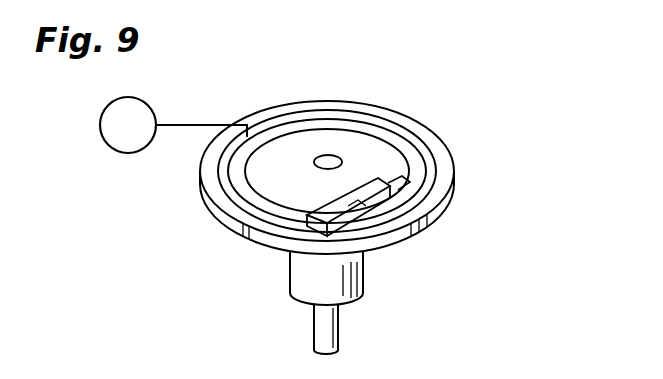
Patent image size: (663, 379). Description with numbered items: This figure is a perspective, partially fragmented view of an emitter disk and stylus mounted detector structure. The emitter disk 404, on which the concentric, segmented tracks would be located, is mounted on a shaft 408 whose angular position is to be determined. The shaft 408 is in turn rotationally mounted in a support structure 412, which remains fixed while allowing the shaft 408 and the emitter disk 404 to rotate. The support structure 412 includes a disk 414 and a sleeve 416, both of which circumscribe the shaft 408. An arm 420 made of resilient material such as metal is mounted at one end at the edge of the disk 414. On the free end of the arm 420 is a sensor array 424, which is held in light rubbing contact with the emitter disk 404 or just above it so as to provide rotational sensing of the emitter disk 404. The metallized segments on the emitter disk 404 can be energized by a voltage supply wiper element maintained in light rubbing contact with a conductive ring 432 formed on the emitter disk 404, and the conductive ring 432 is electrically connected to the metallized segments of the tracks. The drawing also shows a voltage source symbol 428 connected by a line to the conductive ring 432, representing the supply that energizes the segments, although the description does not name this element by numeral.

The emitter disk 404 is at (357, 138).
The shaft 408 is at (338, 322).
The support structure 412 is at (196, 216).
The disk 414 is at (447, 170).
The sleeve 416 is at (290, 276).
The arm 420 is at (367, 207).
The sensor array 424 is at (430, 187).
The voltmeter 428 is at (193, 124).
The conductive ring 432 is at (300, 117).